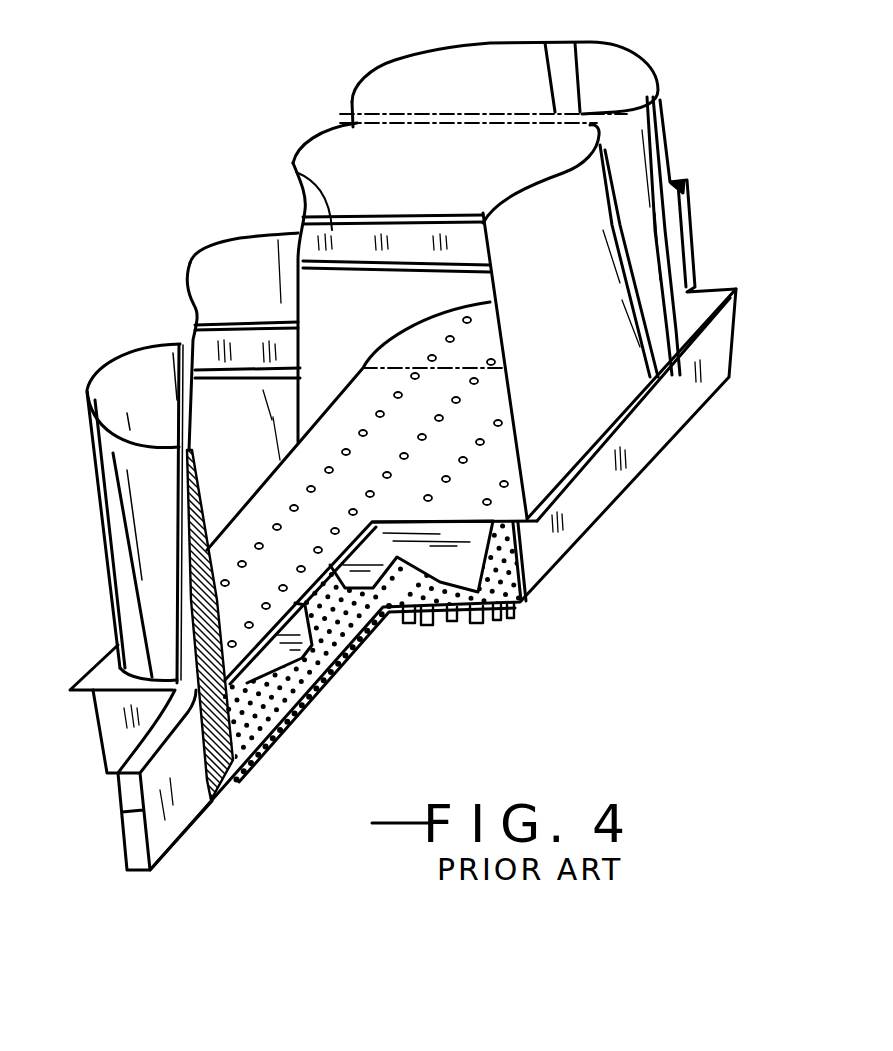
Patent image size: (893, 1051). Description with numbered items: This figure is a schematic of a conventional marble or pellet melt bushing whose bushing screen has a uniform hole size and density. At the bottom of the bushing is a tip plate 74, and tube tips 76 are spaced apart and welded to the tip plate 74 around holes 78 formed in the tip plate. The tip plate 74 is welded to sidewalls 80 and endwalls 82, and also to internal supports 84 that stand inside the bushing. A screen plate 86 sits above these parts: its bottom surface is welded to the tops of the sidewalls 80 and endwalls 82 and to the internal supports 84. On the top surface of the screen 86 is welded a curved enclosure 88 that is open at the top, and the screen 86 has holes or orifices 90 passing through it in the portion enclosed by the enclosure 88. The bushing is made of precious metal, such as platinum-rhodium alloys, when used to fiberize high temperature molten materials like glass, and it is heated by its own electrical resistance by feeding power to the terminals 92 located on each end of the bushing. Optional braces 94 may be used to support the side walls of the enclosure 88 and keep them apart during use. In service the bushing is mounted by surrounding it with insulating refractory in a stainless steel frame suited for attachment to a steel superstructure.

The tip plate 74 is at (387, 613).
The tube tips 76 is at (493, 623).
The holes 78 is at (353, 643).
The sidewalls 80 is at (583, 500).
The endwalls 82 is at (118, 722).
The internal supports 84 is at (517, 550).
The screen plate 86 is at (497, 463).
The curved enclosure 88 is at (113, 463).
The holes or orifices 90 is at (308, 462).
The terminals 92 is at (563, 67).
The braces 94 is at (232, 348).